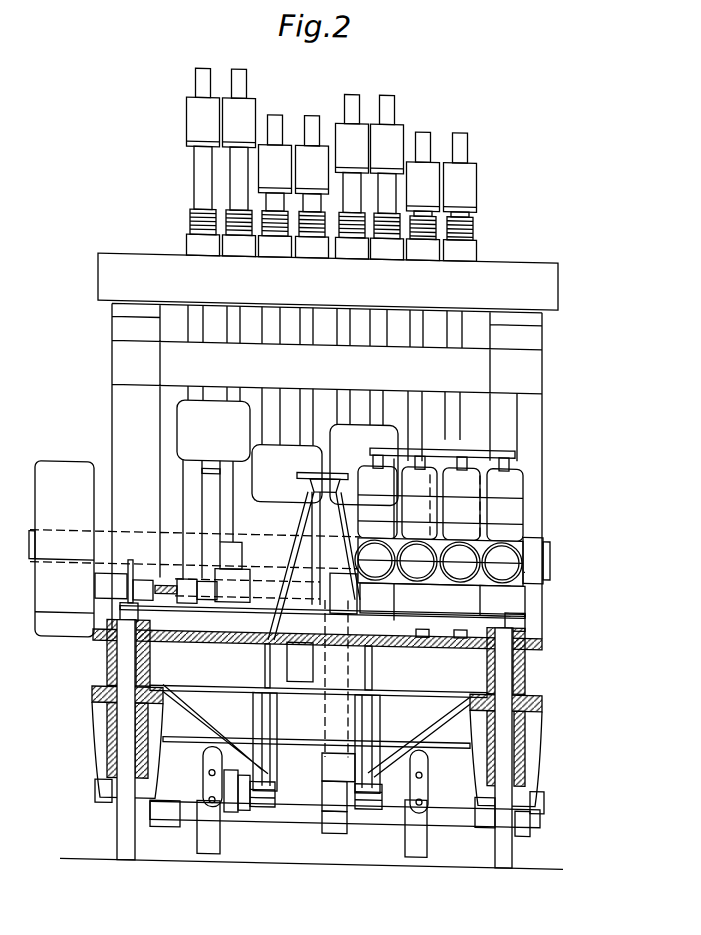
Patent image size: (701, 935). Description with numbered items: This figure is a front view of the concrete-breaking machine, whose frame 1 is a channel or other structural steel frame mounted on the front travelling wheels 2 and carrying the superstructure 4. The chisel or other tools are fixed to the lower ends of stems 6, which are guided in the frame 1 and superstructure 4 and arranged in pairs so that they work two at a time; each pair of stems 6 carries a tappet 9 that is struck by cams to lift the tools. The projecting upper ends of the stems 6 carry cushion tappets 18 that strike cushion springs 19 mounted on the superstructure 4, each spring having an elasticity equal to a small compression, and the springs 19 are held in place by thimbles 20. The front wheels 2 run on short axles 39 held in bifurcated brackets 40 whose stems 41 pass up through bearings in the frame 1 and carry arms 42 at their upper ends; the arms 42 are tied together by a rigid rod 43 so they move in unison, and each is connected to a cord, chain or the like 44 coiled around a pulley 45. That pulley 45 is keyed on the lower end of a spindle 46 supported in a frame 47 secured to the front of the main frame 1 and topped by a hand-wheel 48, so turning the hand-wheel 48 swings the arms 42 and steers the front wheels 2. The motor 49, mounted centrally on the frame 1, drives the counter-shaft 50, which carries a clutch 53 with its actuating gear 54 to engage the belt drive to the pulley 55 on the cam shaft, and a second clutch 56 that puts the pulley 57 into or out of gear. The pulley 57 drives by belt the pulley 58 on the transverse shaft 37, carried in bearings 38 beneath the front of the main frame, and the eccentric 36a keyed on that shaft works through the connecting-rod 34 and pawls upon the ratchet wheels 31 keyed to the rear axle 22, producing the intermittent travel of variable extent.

The frame 1 is at (150, 661).
The front travelling wheels 2 is at (117, 839).
The superstructure 4 is at (328, 281).
The stems 6 is at (460, 130).
The tappet 9 is at (213, 501).
The cushion tappets 18 is at (462, 177).
The cushion springs 19 is at (470, 221).
The thimbles 20 is at (470, 240).
The axle 22 is at (166, 821).
The ratchet wheels 31 is at (211, 850).
The connecting-rod 34 is at (205, 765).
The eccentric 36a is at (236, 810).
The transverse shaft 37 is at (307, 790).
The bearings 38 is at (352, 779).
The short axles 39 is at (97, 784).
The bifurcated brackets 40 is at (122, 749).
The stems 41 is at (107, 660).
The arms 42 is at (118, 606).
The rigid rod 43 is at (424, 630).
The cord, chain or the like 44 is at (460, 630).
The pulley 45 is at (314, 574).
The spindle 46 is at (452, 553).
The frame 47 is at (302, 478).
The hand-wheel 48 is at (338, 466).
The motor 49 is at (520, 481).
The counter-shaft 50 is at (525, 590).
The clutch 53 is at (229, 628).
The actuating gear 54 is at (131, 557).
The pulley 55 is at (61, 549).
The clutch 56 is at (385, 568).
The pulley 57 is at (343, 593).
The pulley 58 is at (337, 818).